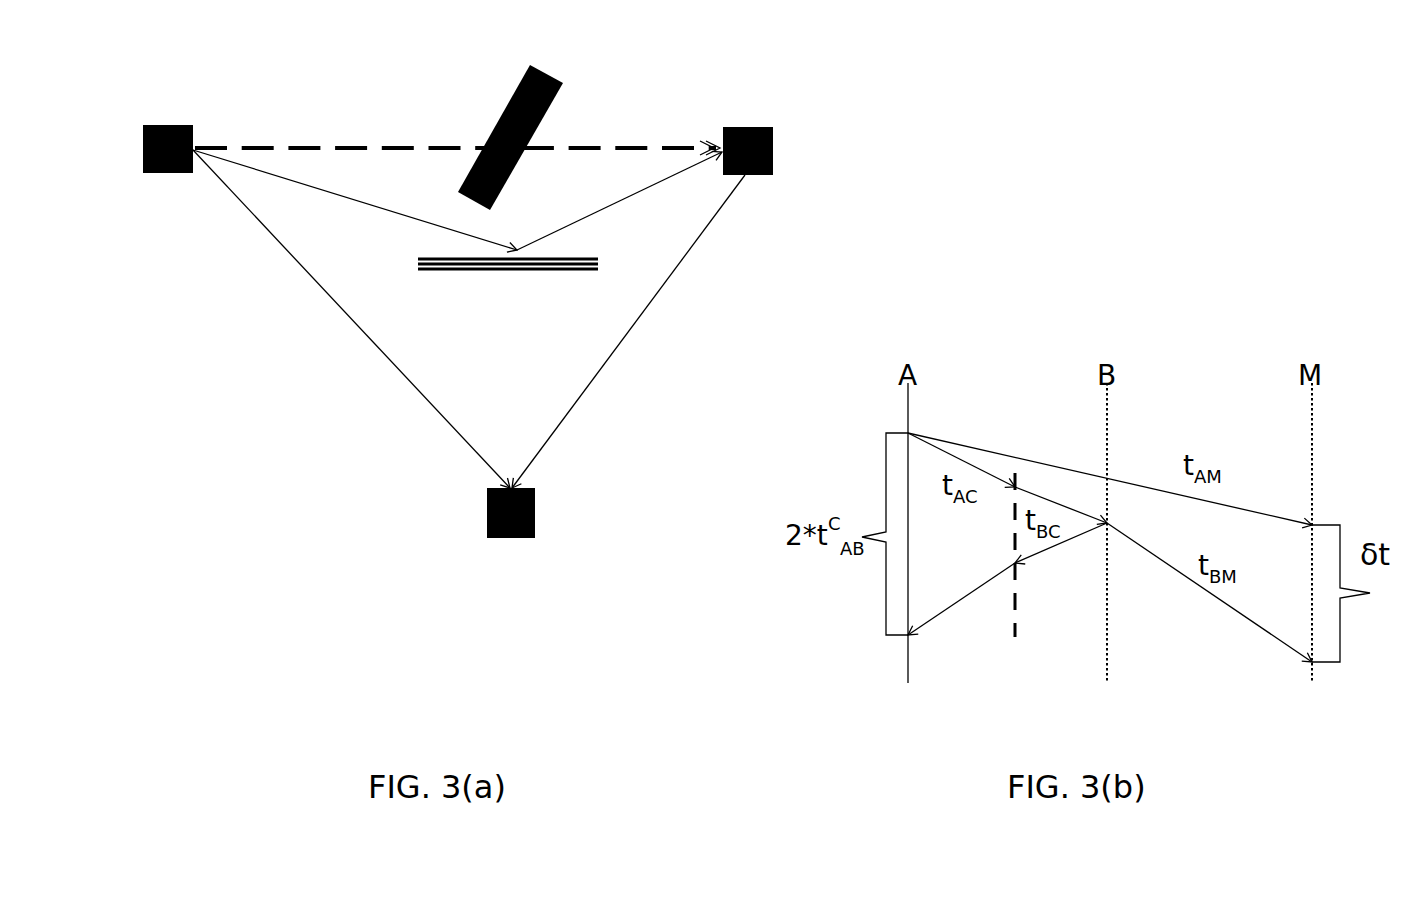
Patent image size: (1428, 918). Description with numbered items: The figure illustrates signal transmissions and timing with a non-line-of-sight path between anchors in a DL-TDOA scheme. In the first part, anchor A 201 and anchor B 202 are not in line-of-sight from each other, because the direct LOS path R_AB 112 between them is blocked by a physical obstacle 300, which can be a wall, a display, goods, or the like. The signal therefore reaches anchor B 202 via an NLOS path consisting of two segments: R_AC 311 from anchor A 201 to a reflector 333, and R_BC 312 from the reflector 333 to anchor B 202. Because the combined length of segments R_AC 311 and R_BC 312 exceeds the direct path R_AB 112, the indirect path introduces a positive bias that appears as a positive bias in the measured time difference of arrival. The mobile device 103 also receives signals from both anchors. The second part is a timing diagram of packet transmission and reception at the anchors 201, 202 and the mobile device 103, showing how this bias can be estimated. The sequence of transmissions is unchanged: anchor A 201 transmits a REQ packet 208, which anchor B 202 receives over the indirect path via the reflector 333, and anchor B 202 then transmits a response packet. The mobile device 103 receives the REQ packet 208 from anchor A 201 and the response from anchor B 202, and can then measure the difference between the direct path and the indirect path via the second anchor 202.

In FIG. 3A, the anchor A 201 is at (165, 125).
In FIG. 3A, the anchor B 202 is at (748, 126).
In FIG. 3A, the mobile device 103 is at (510, 538).
In FIG. 3A, the physical obstacle 300 is at (487, 128).
In FIG. 3A, the reflector 333 is at (497, 272).
In FIG. 3B, the reflector 333 is at (1012, 433).
In FIG. 3A, the path segment R_AC 311 is at (400, 210).
In FIG. 3A, the path segment R_BC 312 is at (625, 188).
In FIG. 3A, the LOS path R_AB 112 is at (348, 123).
In FIG. 3A, the REQ packet 208 is at (257, 305).